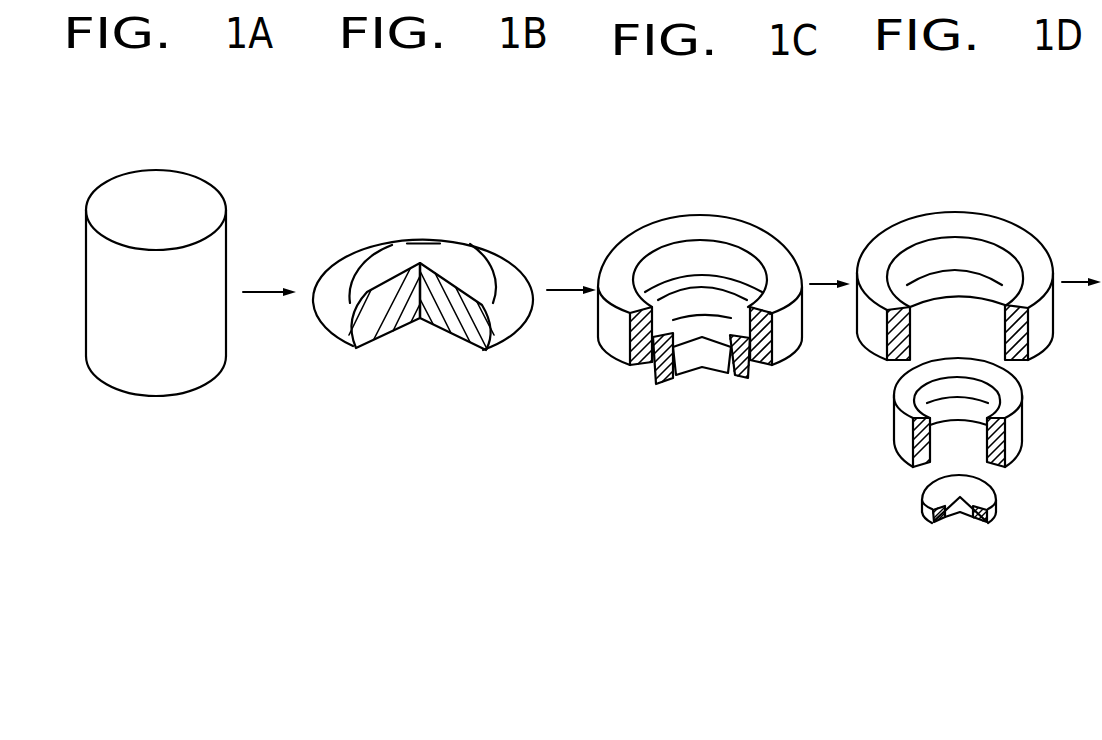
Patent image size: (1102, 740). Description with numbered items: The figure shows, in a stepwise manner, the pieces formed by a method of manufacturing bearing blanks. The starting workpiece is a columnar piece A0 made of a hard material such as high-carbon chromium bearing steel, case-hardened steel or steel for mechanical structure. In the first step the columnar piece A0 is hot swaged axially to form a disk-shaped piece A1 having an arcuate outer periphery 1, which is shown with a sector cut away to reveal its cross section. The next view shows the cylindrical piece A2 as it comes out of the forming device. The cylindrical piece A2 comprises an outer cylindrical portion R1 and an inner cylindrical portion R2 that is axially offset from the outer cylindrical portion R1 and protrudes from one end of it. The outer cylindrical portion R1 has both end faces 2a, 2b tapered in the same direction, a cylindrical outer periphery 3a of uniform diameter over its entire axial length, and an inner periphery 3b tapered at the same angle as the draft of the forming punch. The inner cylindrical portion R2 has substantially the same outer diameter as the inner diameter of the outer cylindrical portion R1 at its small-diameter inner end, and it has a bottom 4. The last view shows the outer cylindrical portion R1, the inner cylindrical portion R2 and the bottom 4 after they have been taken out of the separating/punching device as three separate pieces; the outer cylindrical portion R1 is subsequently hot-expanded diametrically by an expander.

In FIG. 1A, the columnar piece A0 is at (205, 176).
In FIG. 1B, the disk-shaped piece A1 is at (405, 284).
In FIG. 1C, the cylindrical piece A2 is at (691, 309).
In FIG. 1B, the arcuate outer periphery 1 is at (336, 320).
In FIG. 1C, the end face 2a is at (612, 262).
In FIG. 1C, the end face 2b is at (750, 378).
In FIG. 1C, the cylindrical outer periphery 3a is at (793, 338).
In FIG. 1C, the inner periphery 3b is at (710, 257).
In FIG. 1C, the bottom 4 is at (702, 340).
In FIG. 1D, the bottom 4 is at (922, 517).
In FIG. 1C, the outer cylindrical portion R1 is at (691, 305).
In FIG. 1D, the outer cylindrical portion R1 is at (912, 218).
In FIG. 1C, the inner cylindrical portion R2 is at (665, 382).
In FIG. 1D, the inner cylindrical portion R2 is at (900, 442).